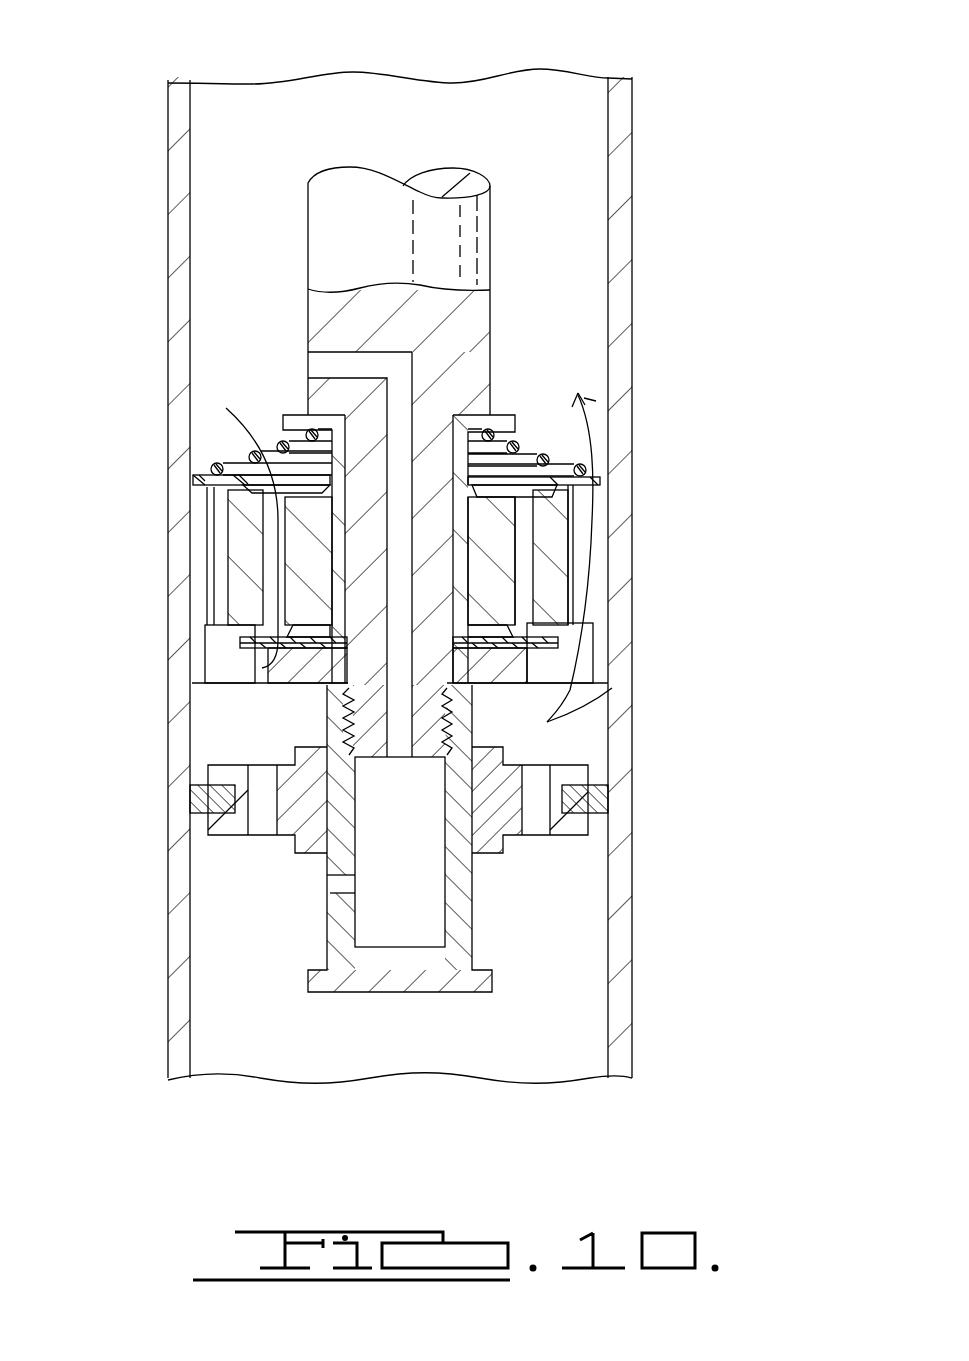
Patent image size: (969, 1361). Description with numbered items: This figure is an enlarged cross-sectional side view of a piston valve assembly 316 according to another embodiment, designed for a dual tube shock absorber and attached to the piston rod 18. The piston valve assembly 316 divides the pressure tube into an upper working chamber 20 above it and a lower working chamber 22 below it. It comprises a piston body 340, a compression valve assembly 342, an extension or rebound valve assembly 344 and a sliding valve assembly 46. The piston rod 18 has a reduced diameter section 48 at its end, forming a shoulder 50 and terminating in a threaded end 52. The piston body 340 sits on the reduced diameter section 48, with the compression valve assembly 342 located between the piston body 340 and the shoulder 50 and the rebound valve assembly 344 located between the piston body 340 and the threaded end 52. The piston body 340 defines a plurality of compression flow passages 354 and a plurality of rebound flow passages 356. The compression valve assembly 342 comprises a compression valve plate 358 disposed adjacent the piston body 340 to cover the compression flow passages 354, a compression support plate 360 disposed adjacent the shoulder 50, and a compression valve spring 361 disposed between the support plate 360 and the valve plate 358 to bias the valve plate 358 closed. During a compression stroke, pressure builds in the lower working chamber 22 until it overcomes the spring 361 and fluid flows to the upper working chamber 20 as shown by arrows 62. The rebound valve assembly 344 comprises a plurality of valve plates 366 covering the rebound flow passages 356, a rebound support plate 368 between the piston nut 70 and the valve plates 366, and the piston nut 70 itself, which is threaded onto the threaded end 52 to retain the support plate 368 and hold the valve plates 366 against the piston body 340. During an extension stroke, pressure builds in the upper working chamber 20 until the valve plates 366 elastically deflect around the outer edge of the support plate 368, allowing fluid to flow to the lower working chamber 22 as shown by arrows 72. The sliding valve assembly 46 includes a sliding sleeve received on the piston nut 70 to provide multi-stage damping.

The piston rod 18 is at (410, 258).
The upper working chamber 20 is at (243, 146).
The lower working chamber 22 is at (396, 1056).
The sliding valve assembly 46 is at (255, 870).
The reduced diameter section 48 is at (432, 462).
The shoulder 50 is at (325, 418).
The threaded end 52 is at (428, 726).
The arrows 62 is at (598, 720).
The piston nut 70 is at (457, 923).
The arrows 72 is at (255, 420).
The piston valve assembly 316 is at (534, 185).
The piston body 340 is at (195, 535).
The compression valve assembly 342 is at (268, 394).
The rebound valve assembly 344 is at (264, 712).
The compression flow passages 354 is at (584, 567).
The rebound flow passages 356 is at (523, 614).
The compression valve plate 358 is at (600, 485).
The compression support plate 360 is at (497, 422).
The compression valve spring 361 is at (548, 462).
The valve plates 366 is at (240, 652).
The rebound support plate 368 is at (282, 672).